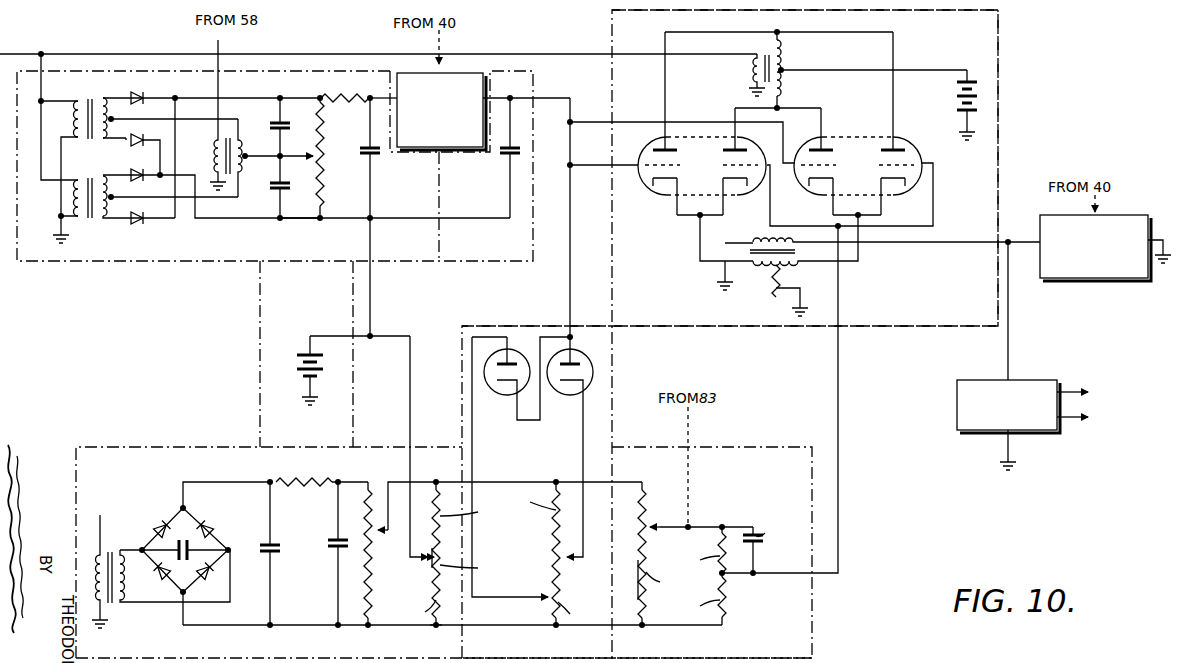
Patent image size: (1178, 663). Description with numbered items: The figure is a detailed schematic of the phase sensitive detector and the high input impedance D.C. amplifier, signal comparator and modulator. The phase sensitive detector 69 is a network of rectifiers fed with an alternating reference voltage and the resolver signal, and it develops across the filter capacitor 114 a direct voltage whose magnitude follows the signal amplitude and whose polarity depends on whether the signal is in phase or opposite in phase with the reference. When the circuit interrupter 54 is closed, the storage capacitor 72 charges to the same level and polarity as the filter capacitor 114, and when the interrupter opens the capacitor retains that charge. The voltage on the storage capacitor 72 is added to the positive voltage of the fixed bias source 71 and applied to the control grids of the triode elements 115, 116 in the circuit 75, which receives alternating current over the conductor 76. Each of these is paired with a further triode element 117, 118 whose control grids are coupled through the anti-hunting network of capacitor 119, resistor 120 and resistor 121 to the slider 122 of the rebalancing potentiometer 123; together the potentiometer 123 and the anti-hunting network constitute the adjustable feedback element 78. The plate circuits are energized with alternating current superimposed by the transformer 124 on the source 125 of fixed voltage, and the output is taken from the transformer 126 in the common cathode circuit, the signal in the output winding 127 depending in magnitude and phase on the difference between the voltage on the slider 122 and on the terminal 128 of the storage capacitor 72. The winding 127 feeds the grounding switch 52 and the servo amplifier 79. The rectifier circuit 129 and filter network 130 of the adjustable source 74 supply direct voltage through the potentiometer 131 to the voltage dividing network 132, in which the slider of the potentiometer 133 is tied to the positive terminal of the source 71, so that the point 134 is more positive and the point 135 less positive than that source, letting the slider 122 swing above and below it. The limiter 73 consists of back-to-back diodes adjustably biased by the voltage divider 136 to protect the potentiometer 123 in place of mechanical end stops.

The conductor 76 is at (36, 54).
The phase sensitive detector 69 is at (125, 263).
The fixed bias source 71 is at (260, 365).
The storage capacitor 72 is at (534, 172).
The adjustable voltage limiter 73 is at (522, 326).
The adjustable source of D.C. voltage 74 is at (172, 447).
The high input impedance D.C. amplifier, signal comparator, and modulator 75 is at (897, 328).
The adjustable feedback element 78 is at (812, 622).
The servo amplifier 79 is at (957, 410).
The circuit interrupter 54 is at (441, 111).
The grounding switch 52 is at (1105, 248).
The filter capacitor 114 is at (374, 160).
The triode element 115 is at (654, 136).
The triode element 116 is at (834, 134).
The triode element 117 is at (900, 137).
The triode element 118 is at (726, 126).
The capacitor 119 is at (758, 548).
The resistor 120 is at (726, 530).
The resistor 121 is at (726, 610).
The slider 122 is at (663, 570).
The feedback or rebalancing potentiometer 123 is at (646, 508).
The transformer 124 is at (792, 62).
The source of fixed voltage 125 is at (980, 98).
The transformer 126 is at (762, 272).
The output winding 127 is at (758, 240).
The terminal 128 is at (512, 97).
The rectifier circuit 129 is at (152, 517).
The filter network 130 is at (350, 476).
The potentiometer 131 is at (372, 540).
The voltage dividing network 132 is at (429, 563).
The potentiometer 133 is at (437, 548).
The voltage point 134 is at (437, 485).
The voltage point 135 is at (437, 626).
The voltage divider 136 is at (566, 573).